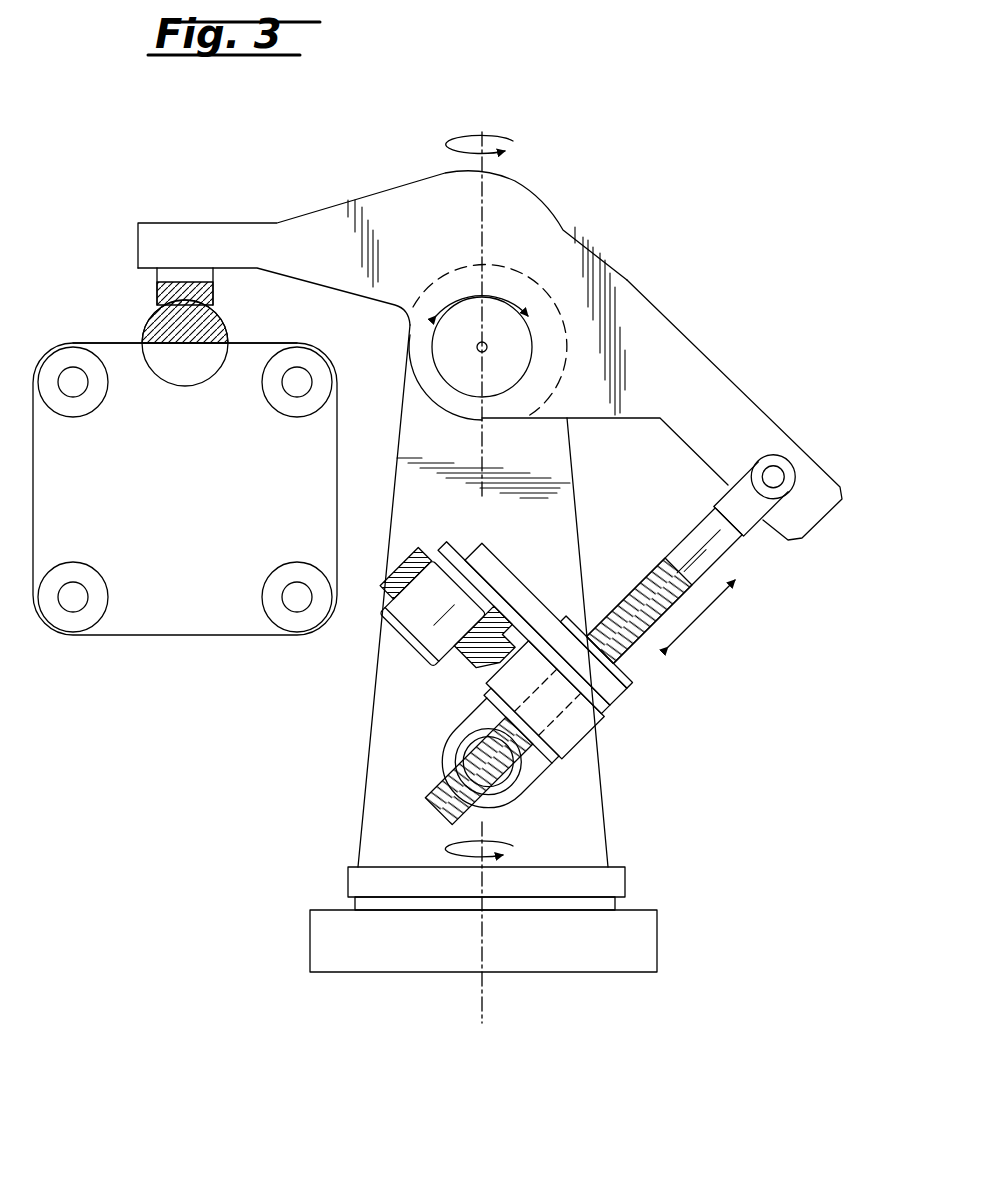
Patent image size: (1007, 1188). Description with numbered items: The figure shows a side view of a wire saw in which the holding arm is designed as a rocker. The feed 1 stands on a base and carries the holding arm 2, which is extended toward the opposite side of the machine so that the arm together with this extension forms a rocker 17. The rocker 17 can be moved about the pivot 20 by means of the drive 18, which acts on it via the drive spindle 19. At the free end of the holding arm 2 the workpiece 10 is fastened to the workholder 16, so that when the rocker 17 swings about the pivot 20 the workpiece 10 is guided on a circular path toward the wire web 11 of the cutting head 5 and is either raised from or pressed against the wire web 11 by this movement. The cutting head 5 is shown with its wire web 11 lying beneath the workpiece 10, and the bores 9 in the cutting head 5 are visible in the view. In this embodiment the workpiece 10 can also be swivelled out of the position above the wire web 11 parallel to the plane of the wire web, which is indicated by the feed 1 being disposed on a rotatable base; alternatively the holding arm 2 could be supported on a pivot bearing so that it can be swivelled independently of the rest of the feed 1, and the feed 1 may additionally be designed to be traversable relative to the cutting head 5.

The feed 1 is at (592, 815).
The holding arm 2 is at (227, 232).
The cutting head 5 is at (146, 647).
The bores 9 is at (87, 403).
The workpiece 10 is at (157, 323).
The wire web 11 is at (113, 340).
The workholder 16 is at (170, 283).
The rocker 17 is at (687, 360).
The drive 18 is at (533, 608).
The drive spindle 19 is at (708, 550).
The pivot 20 is at (487, 350).